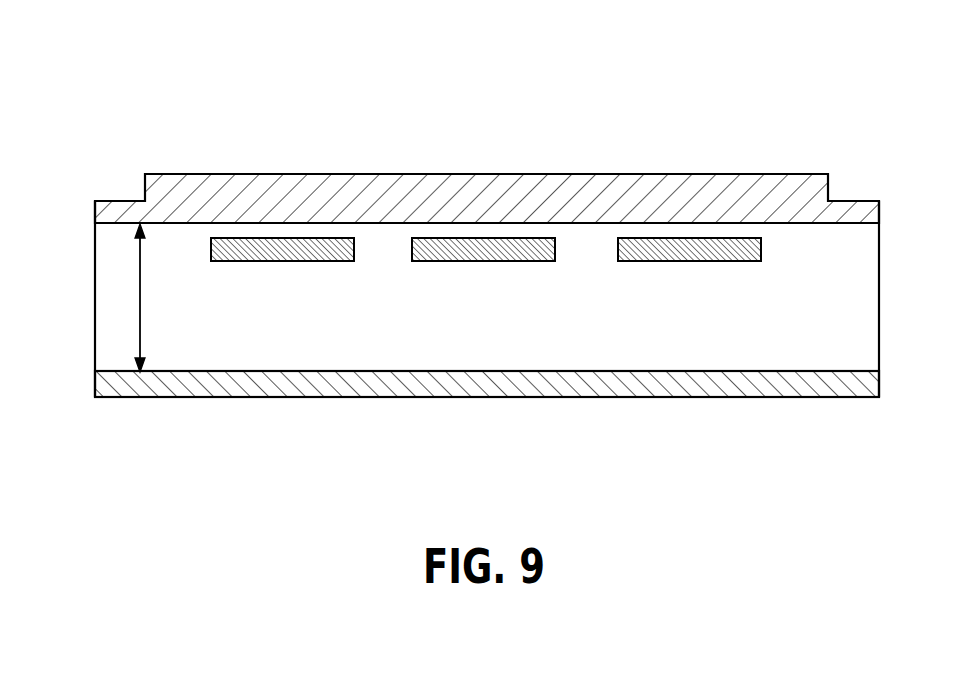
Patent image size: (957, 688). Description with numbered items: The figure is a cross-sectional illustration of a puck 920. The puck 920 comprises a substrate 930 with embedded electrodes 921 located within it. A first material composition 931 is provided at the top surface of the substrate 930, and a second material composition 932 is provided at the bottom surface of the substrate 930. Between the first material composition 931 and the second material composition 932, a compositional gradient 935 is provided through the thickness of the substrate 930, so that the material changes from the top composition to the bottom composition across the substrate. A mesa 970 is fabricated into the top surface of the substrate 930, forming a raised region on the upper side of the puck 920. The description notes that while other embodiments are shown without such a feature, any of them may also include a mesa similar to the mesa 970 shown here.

The puck 920 is at (460, 253).
The embedded electrodes 921 is at (482, 252).
The substrate 930 is at (487, 337).
The first material composition 931 is at (232, 190).
The second material composition 932 is at (199, 388).
The compositional gradient 935 is at (140, 297).
The mesa 970 is at (605, 165).